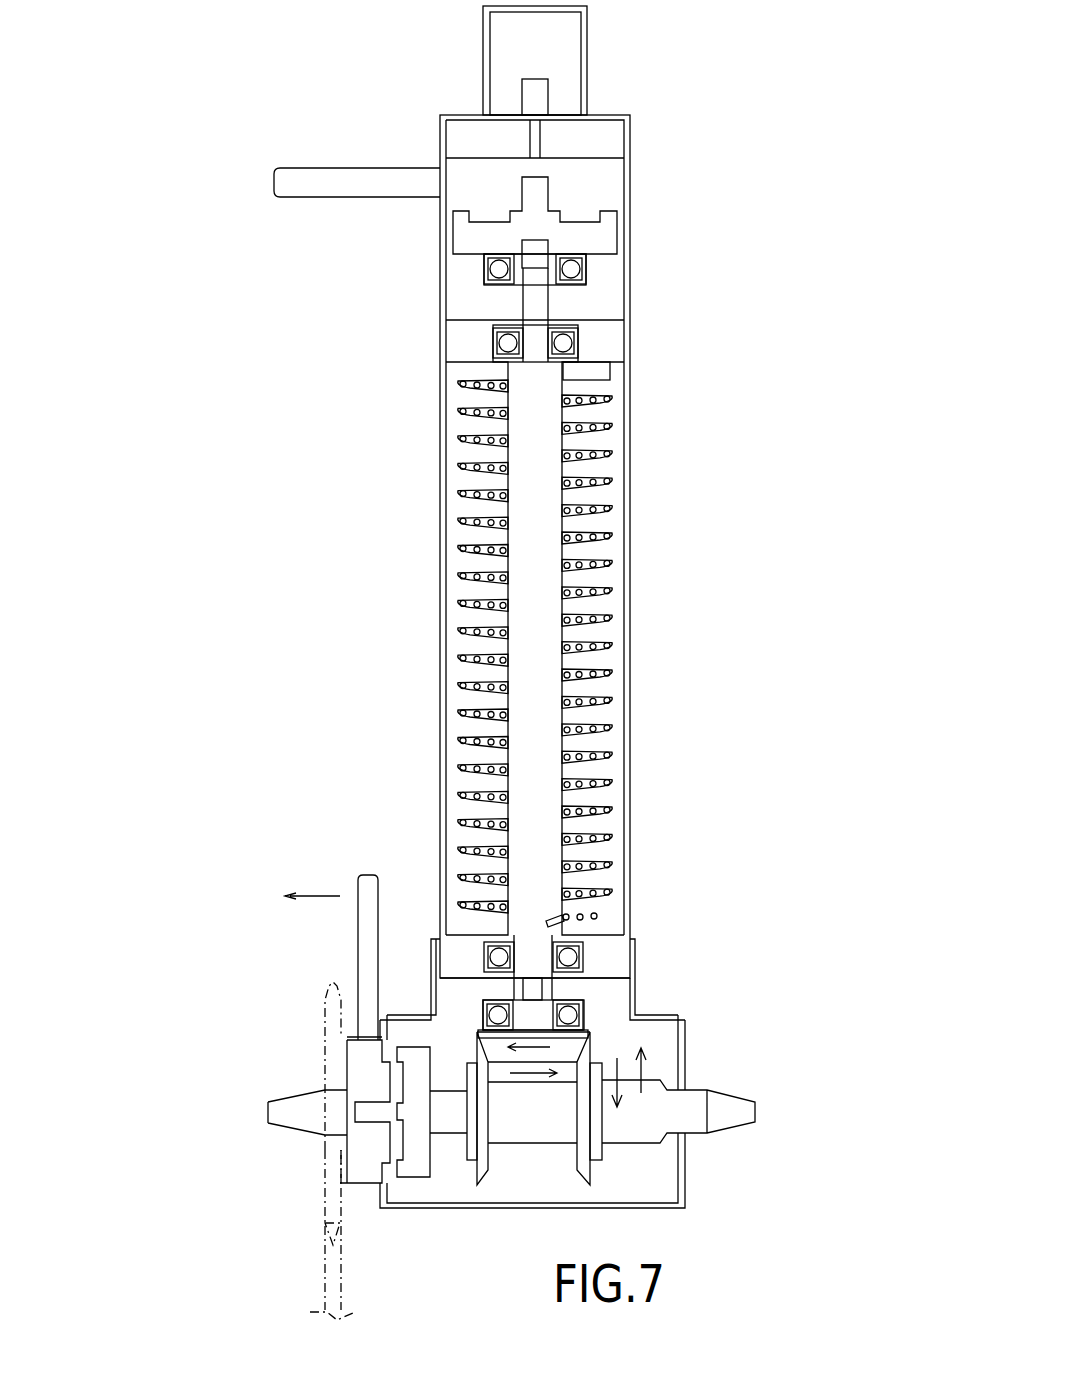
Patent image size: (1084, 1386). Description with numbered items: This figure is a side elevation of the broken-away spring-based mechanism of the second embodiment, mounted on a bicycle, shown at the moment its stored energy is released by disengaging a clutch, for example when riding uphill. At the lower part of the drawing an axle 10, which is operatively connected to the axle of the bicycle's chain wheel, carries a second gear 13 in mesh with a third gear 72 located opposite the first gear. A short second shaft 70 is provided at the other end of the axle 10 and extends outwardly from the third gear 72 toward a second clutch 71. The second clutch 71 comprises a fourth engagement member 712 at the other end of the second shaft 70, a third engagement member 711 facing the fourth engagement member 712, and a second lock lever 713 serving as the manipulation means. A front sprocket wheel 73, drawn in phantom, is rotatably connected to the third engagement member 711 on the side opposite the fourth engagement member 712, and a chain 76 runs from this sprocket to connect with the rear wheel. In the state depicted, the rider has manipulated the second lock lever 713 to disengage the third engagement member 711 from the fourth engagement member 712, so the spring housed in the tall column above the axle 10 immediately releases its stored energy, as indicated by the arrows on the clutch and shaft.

The axle 10 is at (683, 1107).
The second gear 13 is at (572, 1040).
The second shaft 70 is at (445, 1130).
The second clutch 71 is at (295, 1145).
The third engagement member 711 is at (372, 1150).
The fourth engagement member 712 is at (421, 1153).
The second lock lever 713 is at (372, 897).
The third gear 72 is at (483, 1068).
The front sprocket wheel 73 is at (335, 1198).
The chain 76 is at (337, 1270).